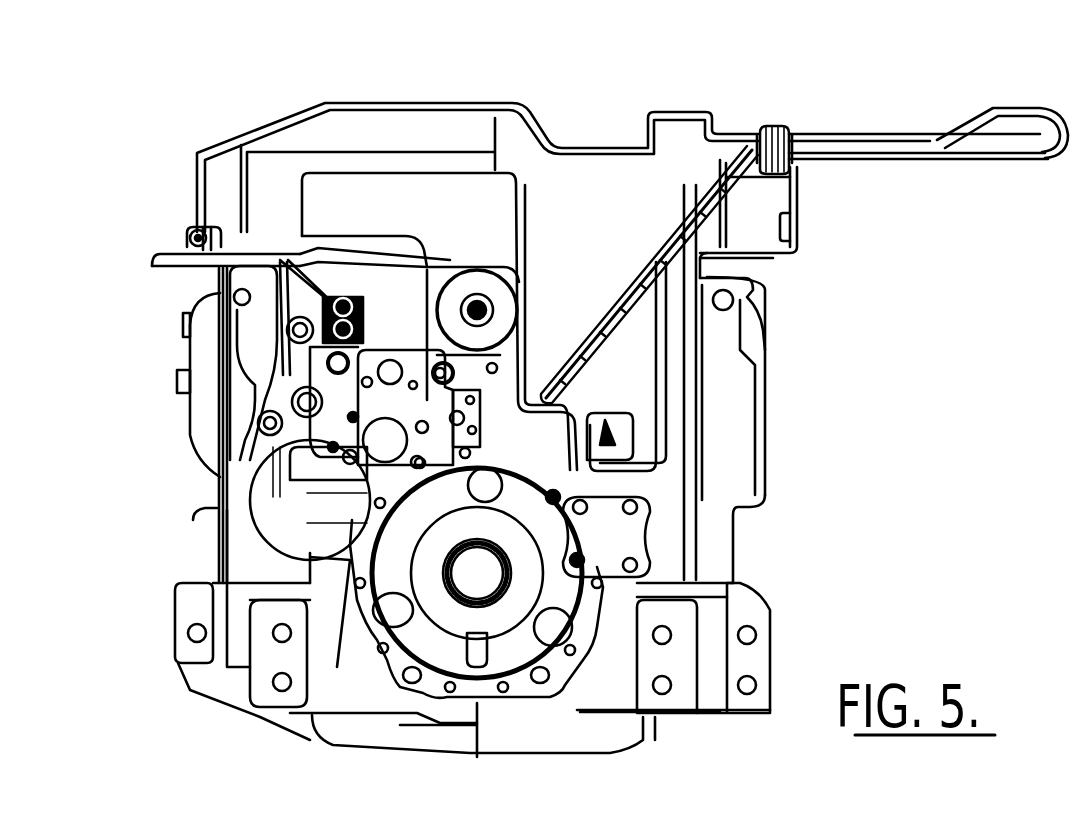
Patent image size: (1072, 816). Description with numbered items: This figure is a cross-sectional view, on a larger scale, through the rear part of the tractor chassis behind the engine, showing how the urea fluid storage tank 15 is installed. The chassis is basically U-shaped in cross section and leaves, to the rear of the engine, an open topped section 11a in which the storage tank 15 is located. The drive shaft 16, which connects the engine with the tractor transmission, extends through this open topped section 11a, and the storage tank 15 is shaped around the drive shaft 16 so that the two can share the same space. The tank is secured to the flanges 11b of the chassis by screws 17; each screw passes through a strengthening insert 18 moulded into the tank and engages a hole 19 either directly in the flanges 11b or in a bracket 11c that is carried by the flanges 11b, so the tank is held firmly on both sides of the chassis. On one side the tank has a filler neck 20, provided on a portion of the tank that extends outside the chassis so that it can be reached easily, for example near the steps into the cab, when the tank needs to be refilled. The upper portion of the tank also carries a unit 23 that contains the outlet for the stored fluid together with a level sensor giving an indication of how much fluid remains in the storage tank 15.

The storage tank 15 is at (385, 125).
The drive shaft 16 is at (477, 298).
The screws 17 is at (199, 225).
The strengthening inserts 18 is at (195, 230).
The holes 19 is at (187, 272).
The filler neck 20 is at (932, 133).
The unit 23 is at (633, 287).
The open topped section 11a is at (670, 462).
The flanges 11b is at (163, 250).
The bracket 11c is at (799, 213).